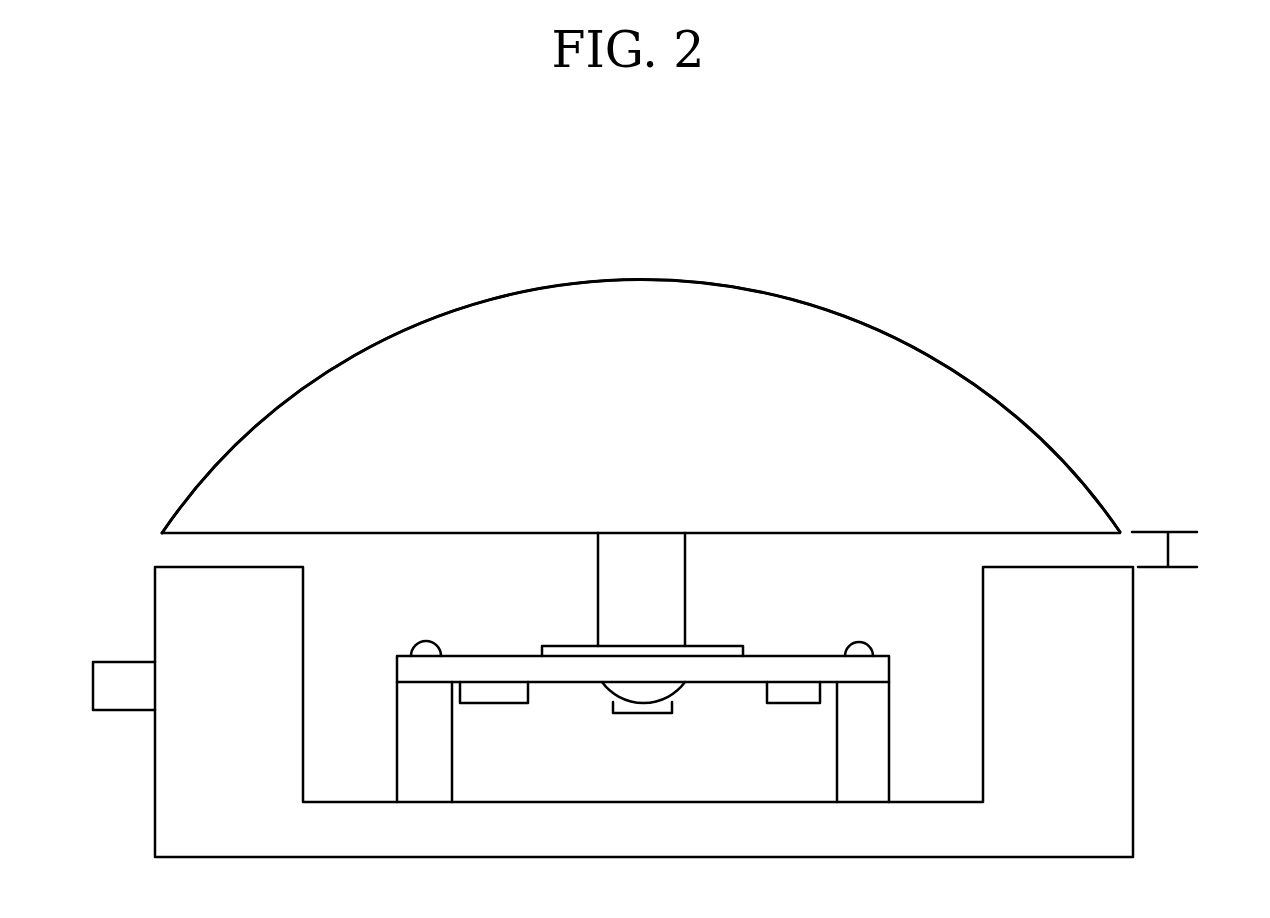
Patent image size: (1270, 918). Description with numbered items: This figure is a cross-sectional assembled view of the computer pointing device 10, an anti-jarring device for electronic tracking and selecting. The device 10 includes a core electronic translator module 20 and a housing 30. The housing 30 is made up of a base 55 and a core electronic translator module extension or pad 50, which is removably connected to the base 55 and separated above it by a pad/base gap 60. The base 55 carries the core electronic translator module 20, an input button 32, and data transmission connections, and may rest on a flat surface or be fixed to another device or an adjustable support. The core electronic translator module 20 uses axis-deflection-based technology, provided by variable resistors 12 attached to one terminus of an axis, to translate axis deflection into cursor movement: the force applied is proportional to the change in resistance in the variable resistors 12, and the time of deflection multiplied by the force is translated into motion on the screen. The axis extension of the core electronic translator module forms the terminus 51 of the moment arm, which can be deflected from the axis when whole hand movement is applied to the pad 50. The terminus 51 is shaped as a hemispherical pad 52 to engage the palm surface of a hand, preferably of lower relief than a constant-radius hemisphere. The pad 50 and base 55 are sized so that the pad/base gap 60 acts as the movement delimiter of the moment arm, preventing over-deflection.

The computer pointing device 10 is at (1112, 266).
The variable resistors 12 is at (490, 703).
The core electronic translator module 20 is at (725, 652).
The housing 30 is at (248, 493).
The input button 32 is at (132, 710).
The core electronic translator module extension or pad 50 is at (807, 350).
The terminus 51 is at (797, 533).
The hemispherical pad 52 is at (478, 347).
The base 55 is at (1090, 760).
The pad/base gap 60 is at (1187, 548).